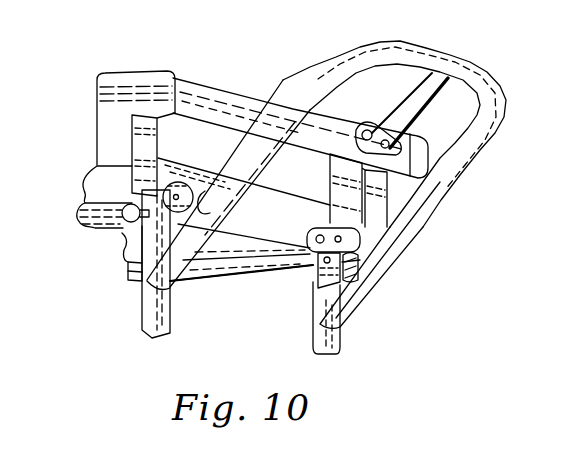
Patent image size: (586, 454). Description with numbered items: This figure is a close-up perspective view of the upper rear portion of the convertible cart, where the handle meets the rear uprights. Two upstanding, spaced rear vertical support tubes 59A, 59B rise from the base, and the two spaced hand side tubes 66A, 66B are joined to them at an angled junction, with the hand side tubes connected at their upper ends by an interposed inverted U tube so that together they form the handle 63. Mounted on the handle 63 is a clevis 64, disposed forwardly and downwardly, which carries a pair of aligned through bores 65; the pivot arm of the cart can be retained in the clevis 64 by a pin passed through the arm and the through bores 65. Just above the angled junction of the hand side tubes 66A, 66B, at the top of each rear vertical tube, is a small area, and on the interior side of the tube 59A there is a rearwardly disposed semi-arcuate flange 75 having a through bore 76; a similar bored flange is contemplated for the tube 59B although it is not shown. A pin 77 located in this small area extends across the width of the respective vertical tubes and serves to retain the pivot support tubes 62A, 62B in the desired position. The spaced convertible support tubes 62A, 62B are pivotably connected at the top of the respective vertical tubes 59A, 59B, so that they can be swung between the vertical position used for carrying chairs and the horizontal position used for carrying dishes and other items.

The handle 63 is at (420, 50).
The hand side tube 66A is at (293, 95).
The hand side tube 66B is at (398, 249).
The clevis 64 is at (412, 124).
The through bores 65 is at (377, 132).
The convertible support tube 62A is at (77, 210).
The convertible support tube 62B is at (219, 253).
The rear vertical support tube 59A is at (147, 312).
The rear vertical support tube 59B is at (342, 342).
The semi-arcuate flange 75 is at (232, 211).
The through bore 76 is at (177, 193).
The pin 77 is at (119, 230).